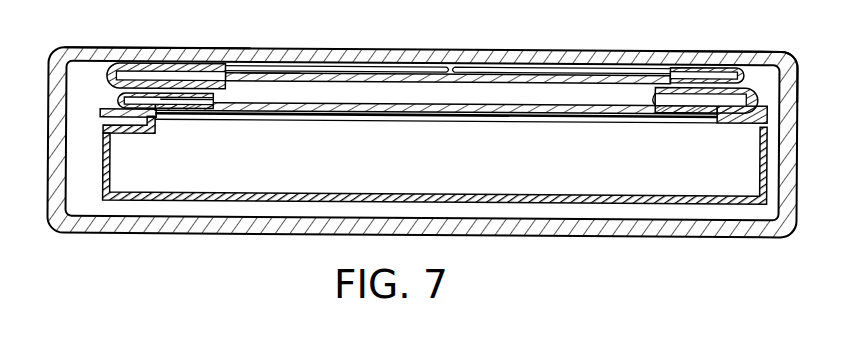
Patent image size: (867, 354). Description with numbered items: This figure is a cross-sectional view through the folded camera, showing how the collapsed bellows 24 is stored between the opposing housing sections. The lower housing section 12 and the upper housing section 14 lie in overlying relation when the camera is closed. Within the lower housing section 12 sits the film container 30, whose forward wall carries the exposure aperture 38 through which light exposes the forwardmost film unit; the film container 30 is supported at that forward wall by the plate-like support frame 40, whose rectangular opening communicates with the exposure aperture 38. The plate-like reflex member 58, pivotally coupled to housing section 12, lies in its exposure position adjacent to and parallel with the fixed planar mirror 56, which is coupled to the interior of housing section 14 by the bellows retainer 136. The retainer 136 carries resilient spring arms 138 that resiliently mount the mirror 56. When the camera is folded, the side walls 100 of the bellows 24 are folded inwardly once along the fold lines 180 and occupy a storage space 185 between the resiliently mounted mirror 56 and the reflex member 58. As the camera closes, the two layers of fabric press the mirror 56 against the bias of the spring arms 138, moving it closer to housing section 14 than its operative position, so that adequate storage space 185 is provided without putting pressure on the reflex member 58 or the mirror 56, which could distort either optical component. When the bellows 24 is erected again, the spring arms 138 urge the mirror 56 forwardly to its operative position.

The housing section 12 is at (200, 236).
The housing section 14 is at (91, 49).
The bellows 24 is at (720, 63).
The film container 30 is at (289, 192).
The exposure aperture 38 is at (157, 128).
The support frame 40 is at (104, 110).
The planar mirror 56 is at (355, 83).
The reflex member 58 is at (337, 116).
The side walls 100 is at (197, 96).
The retainer 136 is at (656, 71).
The spring arms 138 is at (447, 66).
The fold lines 180 is at (213, 89).
The storage space 185 is at (293, 94).